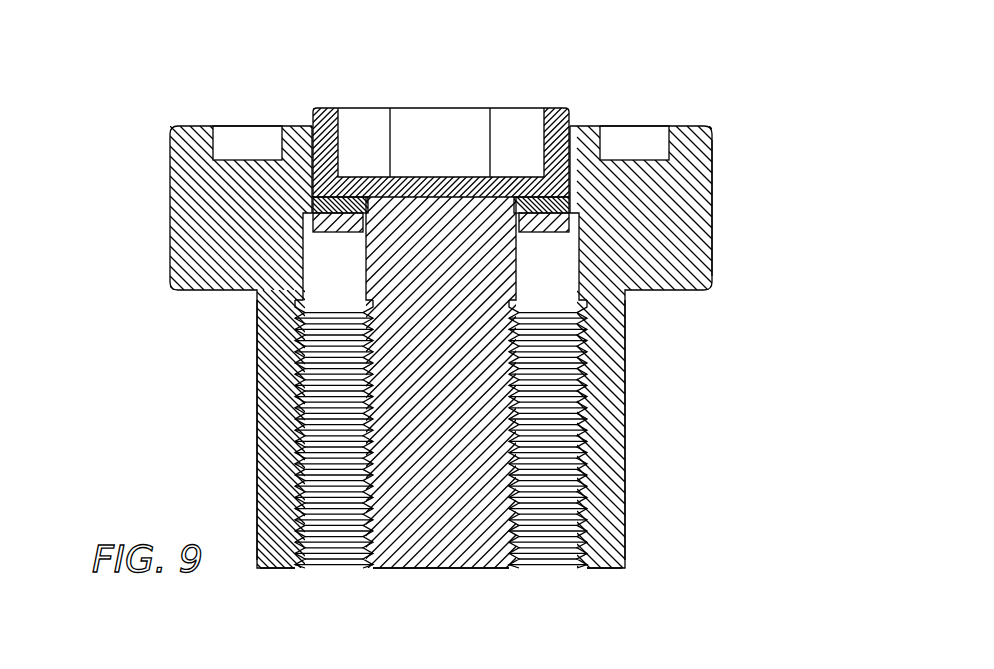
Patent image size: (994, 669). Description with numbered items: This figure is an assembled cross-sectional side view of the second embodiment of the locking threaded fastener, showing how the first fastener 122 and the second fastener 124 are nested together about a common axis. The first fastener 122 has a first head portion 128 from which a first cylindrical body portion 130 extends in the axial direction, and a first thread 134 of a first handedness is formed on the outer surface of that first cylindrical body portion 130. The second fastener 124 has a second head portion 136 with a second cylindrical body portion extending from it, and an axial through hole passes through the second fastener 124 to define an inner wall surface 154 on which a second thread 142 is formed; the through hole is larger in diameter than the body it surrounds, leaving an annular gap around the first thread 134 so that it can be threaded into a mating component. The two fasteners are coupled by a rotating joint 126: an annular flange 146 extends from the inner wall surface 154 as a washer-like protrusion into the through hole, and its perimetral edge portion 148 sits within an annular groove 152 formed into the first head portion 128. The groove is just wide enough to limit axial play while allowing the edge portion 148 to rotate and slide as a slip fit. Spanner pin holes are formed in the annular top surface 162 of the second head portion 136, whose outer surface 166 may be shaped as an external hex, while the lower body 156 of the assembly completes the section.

The first fastener 122 is at (460, 570).
The second fastener 124 is at (678, 290).
The rotating joint 126 is at (337, 237).
The first head portion 128 is at (555, 232).
The first cylindrical body portion 130 is at (417, 535).
The first thread 134 is at (367, 505).
The second head portion 136 is at (712, 160).
The second thread 142 is at (568, 533).
The annular flange 146 is at (362, 203).
The perimetral edge portion 148 is at (367, 203).
The annular groove 152 is at (333, 200).
The inner wall surface 154 is at (313, 263).
The lower body 156 is at (625, 458).
The annular top surface 162 is at (195, 126).
The outer surface 166 is at (712, 207).